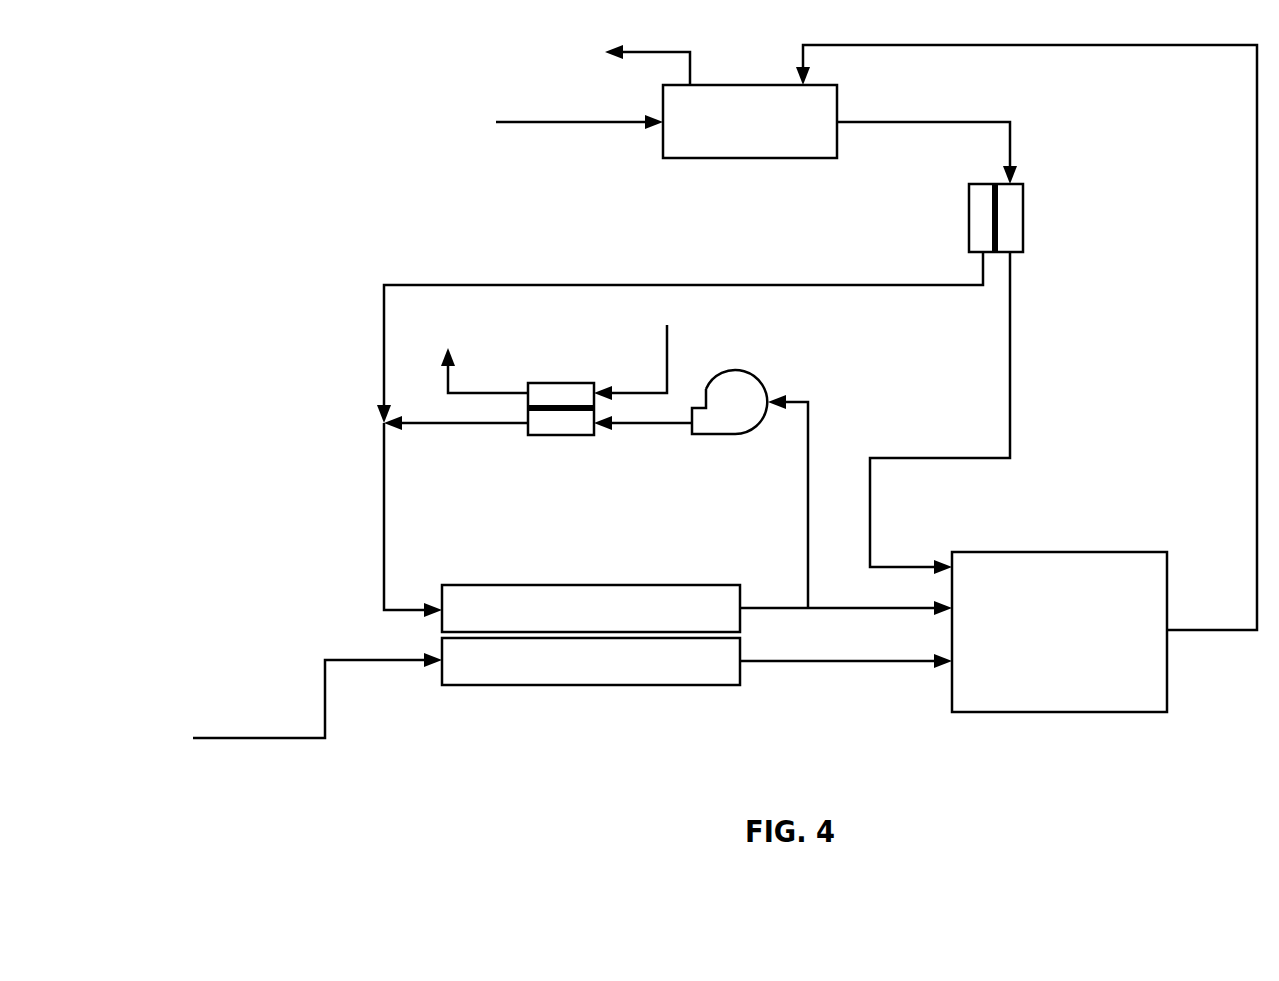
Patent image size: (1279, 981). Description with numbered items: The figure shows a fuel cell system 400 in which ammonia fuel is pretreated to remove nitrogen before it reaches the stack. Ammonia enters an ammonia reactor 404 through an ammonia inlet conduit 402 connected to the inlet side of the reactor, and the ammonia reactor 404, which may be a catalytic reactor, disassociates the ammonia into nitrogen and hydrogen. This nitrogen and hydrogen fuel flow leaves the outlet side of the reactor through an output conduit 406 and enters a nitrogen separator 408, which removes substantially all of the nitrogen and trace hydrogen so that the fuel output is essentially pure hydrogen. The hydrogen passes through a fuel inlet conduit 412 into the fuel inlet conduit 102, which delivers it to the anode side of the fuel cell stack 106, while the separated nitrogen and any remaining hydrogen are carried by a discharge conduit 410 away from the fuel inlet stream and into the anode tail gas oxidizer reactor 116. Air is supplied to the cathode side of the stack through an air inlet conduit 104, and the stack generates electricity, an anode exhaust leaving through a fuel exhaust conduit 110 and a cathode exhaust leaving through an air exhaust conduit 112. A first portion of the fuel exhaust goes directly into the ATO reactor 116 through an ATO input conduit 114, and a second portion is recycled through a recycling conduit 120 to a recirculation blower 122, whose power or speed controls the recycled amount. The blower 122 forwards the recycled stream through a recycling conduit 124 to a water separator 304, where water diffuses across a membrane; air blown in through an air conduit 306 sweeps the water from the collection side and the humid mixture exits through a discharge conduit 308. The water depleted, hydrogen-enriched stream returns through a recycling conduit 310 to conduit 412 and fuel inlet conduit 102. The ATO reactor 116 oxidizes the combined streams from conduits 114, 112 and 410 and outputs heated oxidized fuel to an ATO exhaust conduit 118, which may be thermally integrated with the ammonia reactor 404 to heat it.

The fuel cell system 400 is at (237, 89).
The ammonia inlet conduit 402 is at (568, 122).
The ammonia reactor 404 is at (747, 158).
The output conduit 406 is at (895, 122).
The nitrogen separator 408 is at (1023, 210).
The discharge conduit 410 is at (1010, 272).
The fuel inlet conduit 412 is at (902, 285).
The ATO exhaust conduit 118 is at (660, 52).
The fuel inlet conduit 102 is at (384, 545).
The air inlet conduit 104 is at (325, 722).
The fuel cell stack 106 is at (478, 585).
The fuel exhaust conduit 110 is at (775, 606).
The air exhaust conduit 112 is at (815, 661).
The ATO input conduit 114 is at (907, 607).
The anode tail gas oxidizer (ATO) reactor 116 is at (967, 552).
The recycling conduit 120 is at (808, 543).
The recirculation blower 122 is at (760, 378).
The recycling conduit 124 is at (647, 423).
The water separator 304 is at (555, 435).
The air conduit 306 is at (667, 360).
The discharge conduit 308 is at (448, 380).
The recycling conduit 310 is at (453, 423).